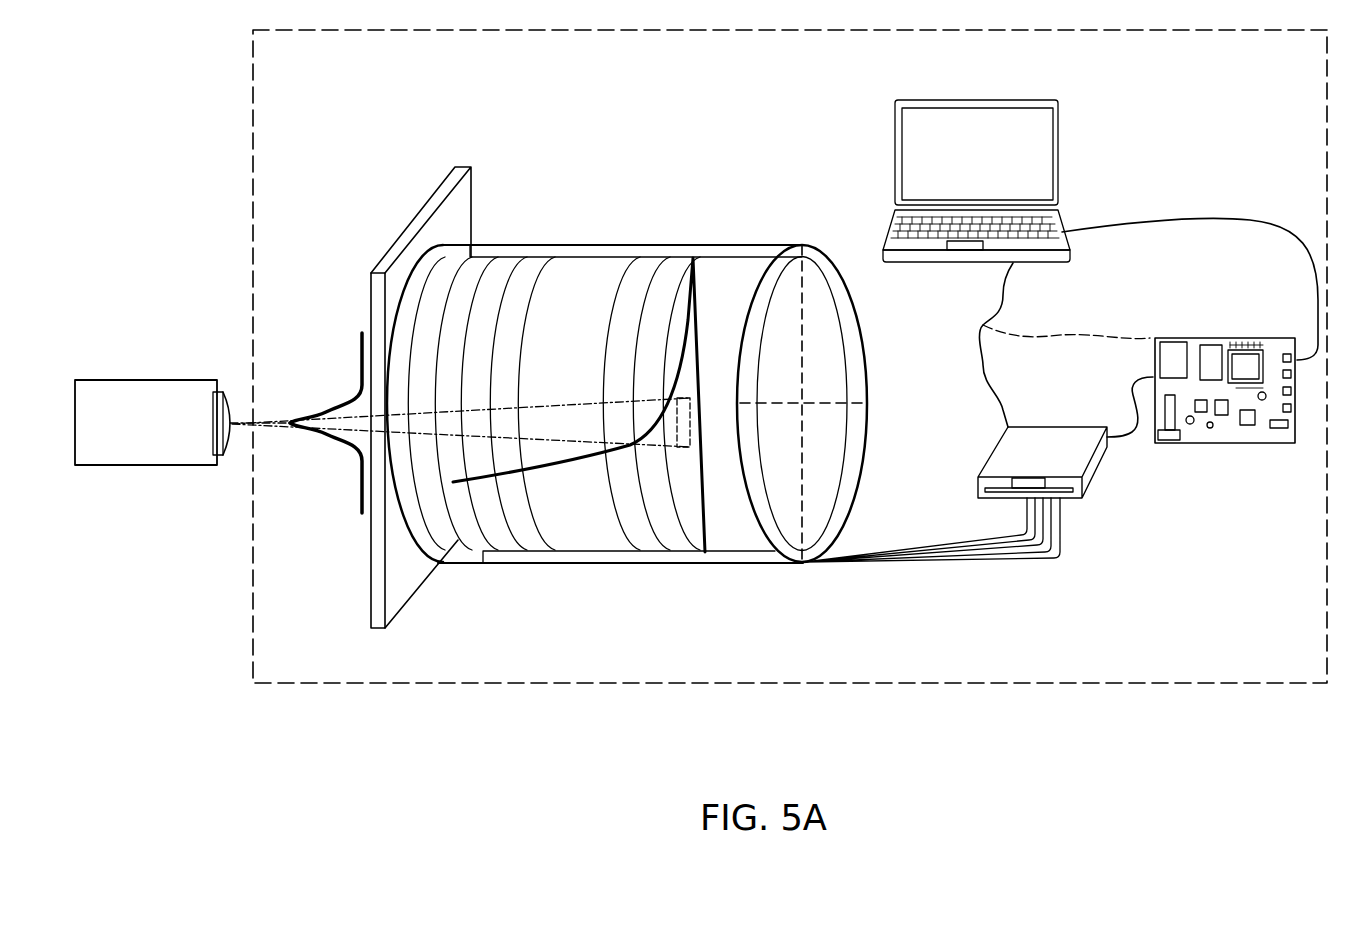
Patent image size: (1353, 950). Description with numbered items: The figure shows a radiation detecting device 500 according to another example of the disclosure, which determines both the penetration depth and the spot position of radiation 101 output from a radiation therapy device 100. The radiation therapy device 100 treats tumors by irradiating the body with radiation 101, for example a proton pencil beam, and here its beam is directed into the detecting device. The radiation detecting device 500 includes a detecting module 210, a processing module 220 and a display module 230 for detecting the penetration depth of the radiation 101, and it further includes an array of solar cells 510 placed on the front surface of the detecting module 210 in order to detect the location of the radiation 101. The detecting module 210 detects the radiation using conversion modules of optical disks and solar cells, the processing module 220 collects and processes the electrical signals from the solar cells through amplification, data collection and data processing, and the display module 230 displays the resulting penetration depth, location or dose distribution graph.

The radiation detecting device 500 is at (703, 87).
The radiation therapy device 100 is at (145, 468).
The radiation 101 is at (270, 425).
The array of solar cells 510 is at (412, 222).
The detecting module 210 is at (630, 565).
The processing module 220 is at (984, 323).
The display module 230 is at (1022, 147).